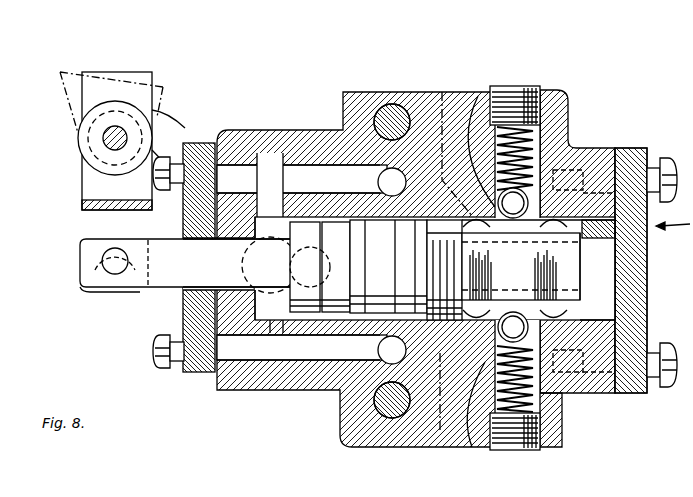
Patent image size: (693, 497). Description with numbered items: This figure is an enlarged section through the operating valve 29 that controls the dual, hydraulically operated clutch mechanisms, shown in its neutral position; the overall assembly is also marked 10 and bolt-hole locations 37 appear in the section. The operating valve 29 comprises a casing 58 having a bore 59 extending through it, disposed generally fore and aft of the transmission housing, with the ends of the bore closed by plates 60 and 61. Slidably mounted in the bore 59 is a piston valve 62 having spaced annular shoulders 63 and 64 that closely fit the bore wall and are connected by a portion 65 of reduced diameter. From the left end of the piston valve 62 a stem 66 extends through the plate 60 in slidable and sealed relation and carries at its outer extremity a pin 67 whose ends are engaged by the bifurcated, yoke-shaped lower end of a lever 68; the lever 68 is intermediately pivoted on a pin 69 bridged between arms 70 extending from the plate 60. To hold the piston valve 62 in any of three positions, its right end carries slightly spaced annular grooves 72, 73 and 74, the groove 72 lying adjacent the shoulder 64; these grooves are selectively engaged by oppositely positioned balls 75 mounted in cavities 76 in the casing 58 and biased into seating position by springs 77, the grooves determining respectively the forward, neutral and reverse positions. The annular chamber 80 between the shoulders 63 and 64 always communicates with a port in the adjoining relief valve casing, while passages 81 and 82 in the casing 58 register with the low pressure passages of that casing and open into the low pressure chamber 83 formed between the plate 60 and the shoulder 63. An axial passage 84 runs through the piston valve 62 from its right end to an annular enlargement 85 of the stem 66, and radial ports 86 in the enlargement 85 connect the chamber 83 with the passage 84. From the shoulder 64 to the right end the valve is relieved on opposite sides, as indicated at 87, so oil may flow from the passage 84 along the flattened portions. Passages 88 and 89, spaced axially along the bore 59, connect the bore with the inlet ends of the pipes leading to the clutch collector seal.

The valve assembly 10 is at (614, 118).
The operating valve 29 is at (620, 128).
The bolt hole 37 is at (348, 108).
The casing 58 is at (340, 432).
The bore 59 is at (232, 393).
The plate 60 is at (197, 393).
The plate 61 is at (647, 330).
The piston valve 62 is at (157, 290).
The annular shoulder 63 is at (388, 266).
The annular shoulder 64 is at (411, 274).
The portion of reduced diameter 65 is at (372, 283).
The stem 66 is at (100, 290).
The pin 67 is at (117, 275).
The lever 68 is at (85, 190).
The pin 69 is at (103, 138).
The arms 70 is at (160, 118).
The annular groove 72 is at (521, 269).
The annular groove 73 is at (538, 275).
The annular groove 74 is at (566, 266).
The ball 75 is at (515, 269).
The cavity 76 is at (572, 152).
The spring 77 is at (560, 135).
The annular chamber 80 is at (330, 345).
The passage 81 is at (380, 183).
The passage 82 is at (311, 349).
The low pressure chamber 83 is at (270, 350).
The axial passage 84 is at (597, 268).
The annular enlargement 85 is at (283, 360).
The radial ports 86 is at (265, 245).
The relieved portion 87 is at (578, 247).
The passage 88 is at (444, 270).
The passage 89 is at (320, 267).